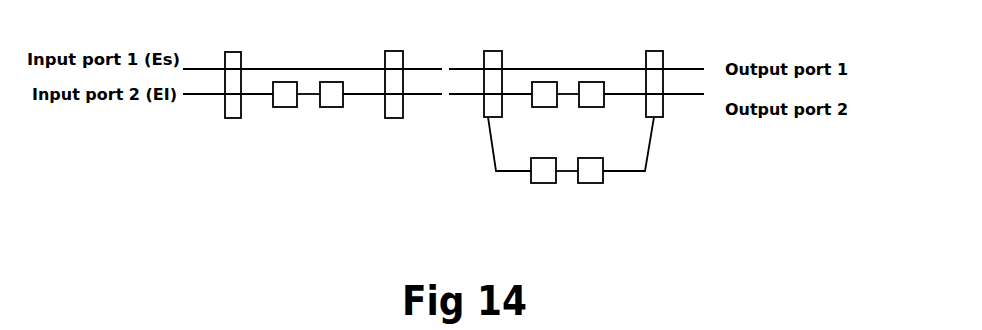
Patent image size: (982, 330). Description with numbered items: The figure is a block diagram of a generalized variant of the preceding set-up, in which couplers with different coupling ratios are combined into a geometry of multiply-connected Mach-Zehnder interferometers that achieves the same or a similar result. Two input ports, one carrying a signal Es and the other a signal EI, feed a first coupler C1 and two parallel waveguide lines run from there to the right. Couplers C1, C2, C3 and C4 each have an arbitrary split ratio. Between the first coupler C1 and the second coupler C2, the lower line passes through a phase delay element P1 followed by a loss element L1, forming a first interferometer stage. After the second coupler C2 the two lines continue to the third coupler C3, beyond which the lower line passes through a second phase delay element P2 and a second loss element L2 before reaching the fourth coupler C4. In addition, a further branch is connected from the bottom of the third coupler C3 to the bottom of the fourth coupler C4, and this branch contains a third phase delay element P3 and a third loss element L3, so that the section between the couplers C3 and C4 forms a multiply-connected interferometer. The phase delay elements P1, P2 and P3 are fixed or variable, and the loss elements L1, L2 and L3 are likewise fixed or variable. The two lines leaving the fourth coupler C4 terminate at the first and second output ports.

The coupler C1 is at (230, 72).
The coupler C2 is at (391, 71).
The coupler C3 is at (491, 71).
The coupler C4 is at (658, 71).
The phase delay element P1 is at (284, 112).
The phase delay element P2 is at (546, 112).
The phase delay element P3 is at (546, 189).
The loss element L1 is at (331, 112).
The loss element L2 is at (591, 112).
The loss element L3 is at (590, 189).